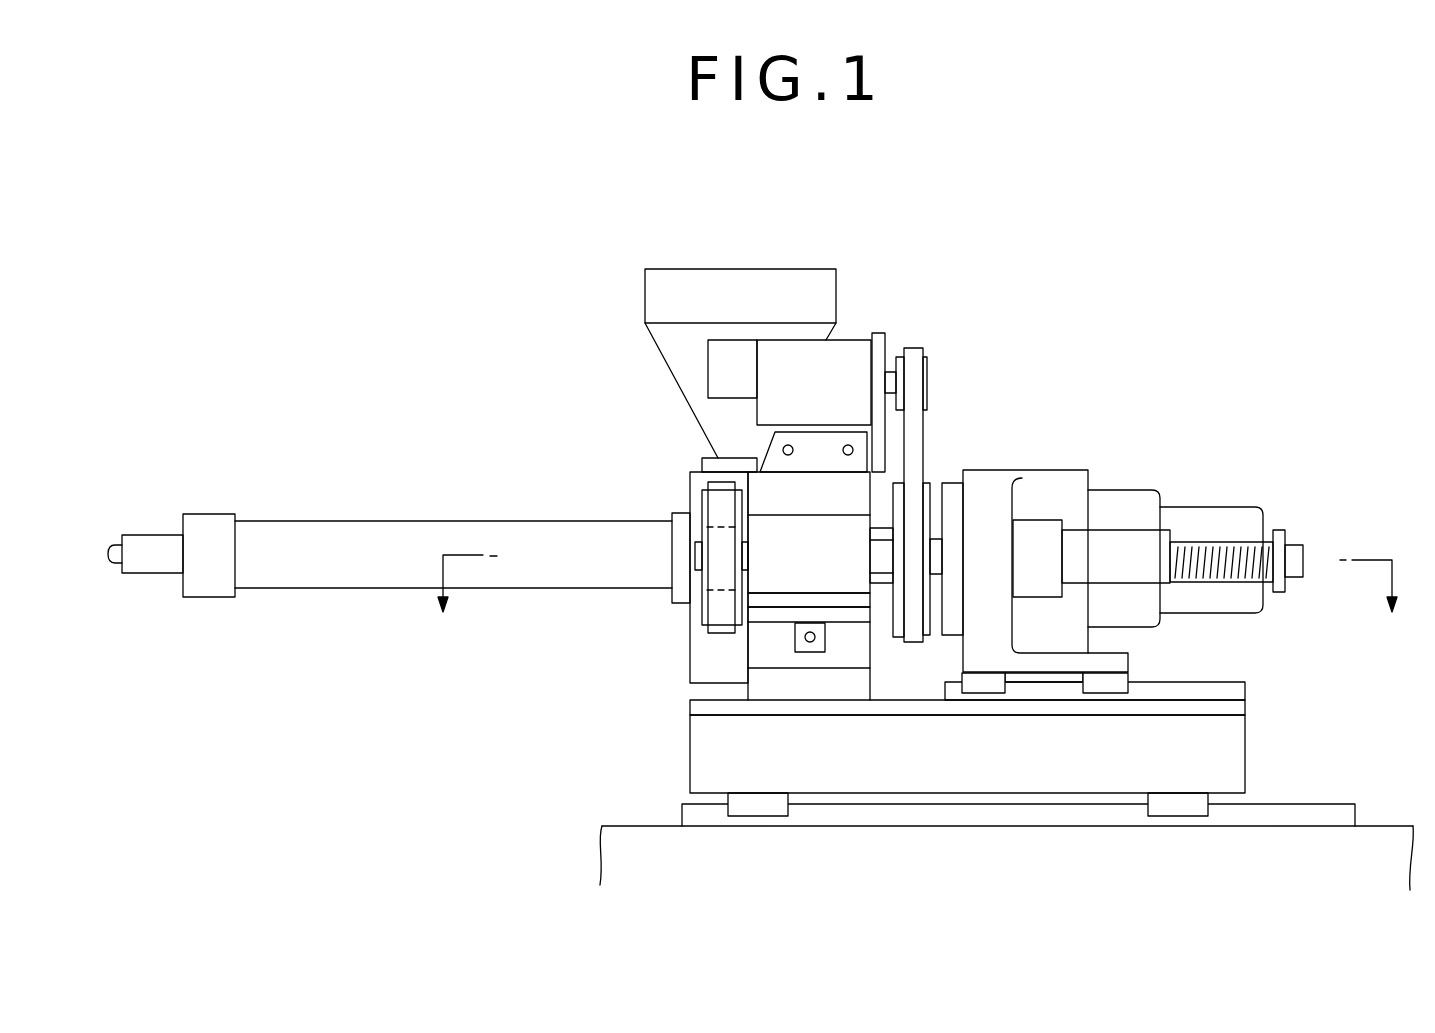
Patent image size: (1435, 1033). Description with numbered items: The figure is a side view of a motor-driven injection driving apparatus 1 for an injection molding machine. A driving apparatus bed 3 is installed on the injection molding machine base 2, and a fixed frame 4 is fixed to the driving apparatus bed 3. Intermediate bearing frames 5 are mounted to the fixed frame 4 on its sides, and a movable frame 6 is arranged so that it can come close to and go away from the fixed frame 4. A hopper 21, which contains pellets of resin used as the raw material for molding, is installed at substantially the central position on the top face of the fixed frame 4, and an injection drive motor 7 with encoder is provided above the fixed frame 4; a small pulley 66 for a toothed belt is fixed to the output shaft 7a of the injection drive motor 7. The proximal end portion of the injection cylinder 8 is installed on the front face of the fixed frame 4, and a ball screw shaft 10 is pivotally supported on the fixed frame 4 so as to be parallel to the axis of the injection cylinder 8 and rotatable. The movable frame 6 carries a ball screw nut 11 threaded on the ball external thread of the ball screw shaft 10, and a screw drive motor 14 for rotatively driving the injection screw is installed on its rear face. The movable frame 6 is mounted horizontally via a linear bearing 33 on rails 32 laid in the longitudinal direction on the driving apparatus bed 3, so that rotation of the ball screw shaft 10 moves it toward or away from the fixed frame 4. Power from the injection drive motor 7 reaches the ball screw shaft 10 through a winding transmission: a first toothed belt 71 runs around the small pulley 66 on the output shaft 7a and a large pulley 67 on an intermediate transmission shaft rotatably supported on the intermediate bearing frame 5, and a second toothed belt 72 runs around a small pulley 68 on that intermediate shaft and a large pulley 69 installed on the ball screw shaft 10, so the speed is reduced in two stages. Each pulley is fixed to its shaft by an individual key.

The motor-driven injection driving apparatus 1 is at (1179, 270).
The injection molding machine base 2 is at (605, 852).
The driving apparatus bed 3 is at (1245, 762).
The fixed frame 4 is at (698, 672).
The intermediate bearing frame 5 is at (776, 527).
The movable frame 6 is at (1068, 470).
The injection drive motor 7 is at (855, 337).
The output shaft 7a is at (888, 352).
The injection cylinder 8 is at (330, 521).
The ball screw shaft 10 is at (1220, 533).
The ball screw nut 11 is at (1142, 530).
The screw drive motor 14 is at (1115, 490).
The hopper 21 is at (675, 270).
The rail 32 is at (1245, 688).
The linear bearing 33 is at (1120, 682).
The small pulley 66 is at (923, 360).
The large pulley 67 is at (935, 487).
The small pulley 68 is at (700, 533).
The large pulley 69 is at (698, 498).
The first toothed belt 71 is at (922, 427).
The second toothed belt 72 is at (720, 636).